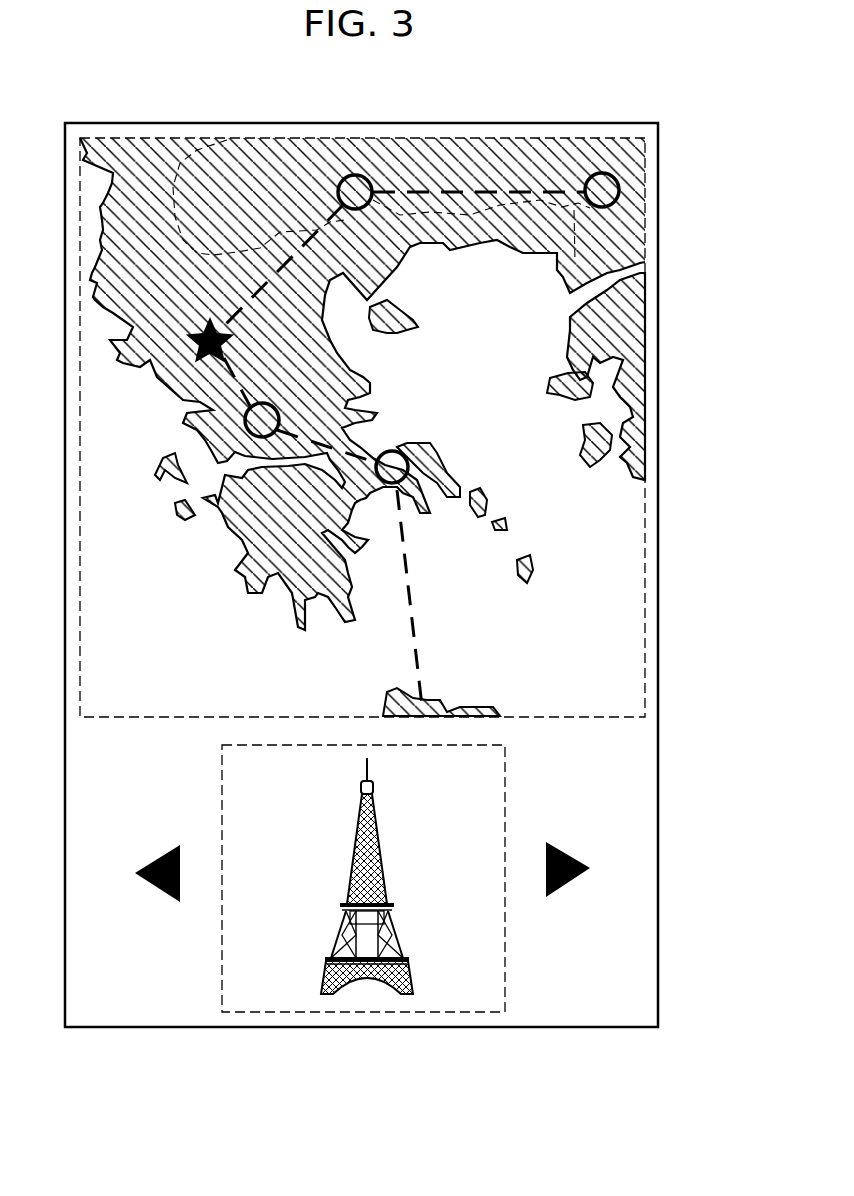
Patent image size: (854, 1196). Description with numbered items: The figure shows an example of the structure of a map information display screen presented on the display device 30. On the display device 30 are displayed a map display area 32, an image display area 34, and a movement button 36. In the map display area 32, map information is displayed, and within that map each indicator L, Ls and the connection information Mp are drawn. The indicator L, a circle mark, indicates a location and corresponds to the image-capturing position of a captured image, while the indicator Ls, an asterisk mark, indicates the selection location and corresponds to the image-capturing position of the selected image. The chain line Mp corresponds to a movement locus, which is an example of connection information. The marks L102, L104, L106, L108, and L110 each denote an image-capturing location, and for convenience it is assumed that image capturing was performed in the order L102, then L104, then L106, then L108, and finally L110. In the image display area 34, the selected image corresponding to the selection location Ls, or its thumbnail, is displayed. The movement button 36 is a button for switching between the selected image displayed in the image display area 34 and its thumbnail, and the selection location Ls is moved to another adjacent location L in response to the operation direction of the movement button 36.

The display device 30 is at (188, 122).
The map display area 32 is at (403, 427).
The image display area 34 is at (506, 776).
The movement button 36 is at (170, 847).
The image-capturing location L102 is at (597, 173).
The image-capturing location L104 is at (349, 175).
The image-capturing location L106 is at (202, 326).
The image-capturing location L108 is at (277, 405).
The image-capturing location L110 is at (397, 450).
The indicator L is at (366, 207).
The indicator Ls is at (178, 347).
The chain line Mp is at (419, 617).